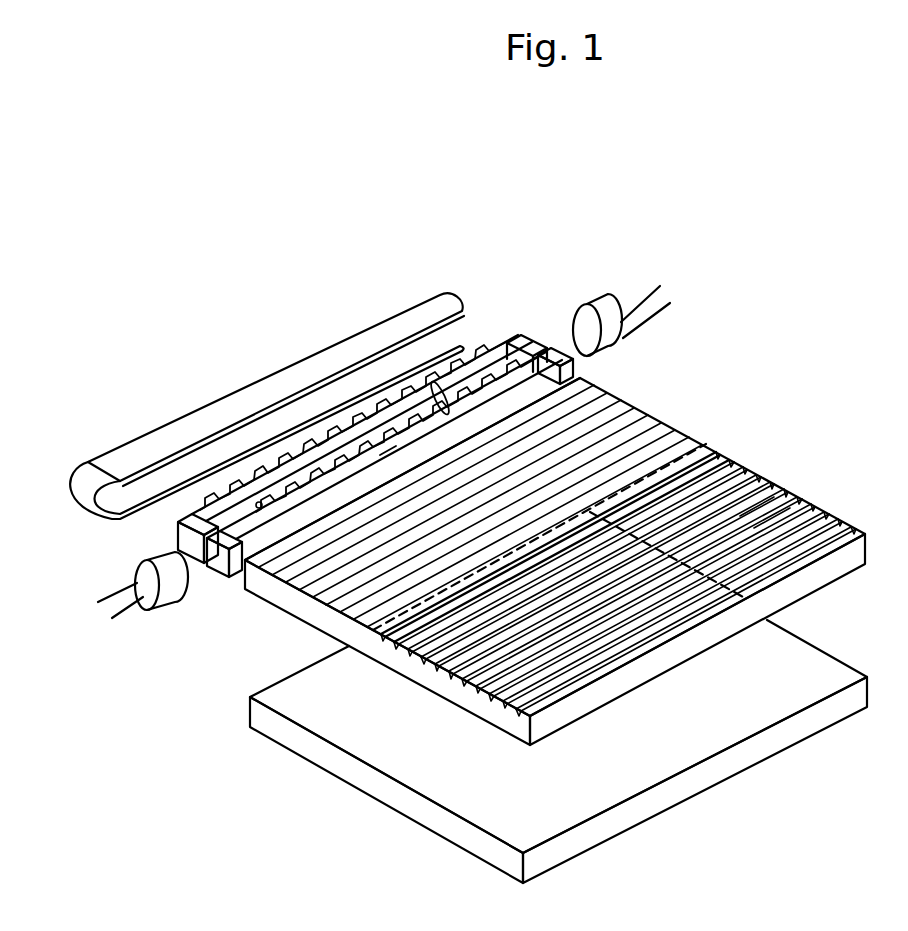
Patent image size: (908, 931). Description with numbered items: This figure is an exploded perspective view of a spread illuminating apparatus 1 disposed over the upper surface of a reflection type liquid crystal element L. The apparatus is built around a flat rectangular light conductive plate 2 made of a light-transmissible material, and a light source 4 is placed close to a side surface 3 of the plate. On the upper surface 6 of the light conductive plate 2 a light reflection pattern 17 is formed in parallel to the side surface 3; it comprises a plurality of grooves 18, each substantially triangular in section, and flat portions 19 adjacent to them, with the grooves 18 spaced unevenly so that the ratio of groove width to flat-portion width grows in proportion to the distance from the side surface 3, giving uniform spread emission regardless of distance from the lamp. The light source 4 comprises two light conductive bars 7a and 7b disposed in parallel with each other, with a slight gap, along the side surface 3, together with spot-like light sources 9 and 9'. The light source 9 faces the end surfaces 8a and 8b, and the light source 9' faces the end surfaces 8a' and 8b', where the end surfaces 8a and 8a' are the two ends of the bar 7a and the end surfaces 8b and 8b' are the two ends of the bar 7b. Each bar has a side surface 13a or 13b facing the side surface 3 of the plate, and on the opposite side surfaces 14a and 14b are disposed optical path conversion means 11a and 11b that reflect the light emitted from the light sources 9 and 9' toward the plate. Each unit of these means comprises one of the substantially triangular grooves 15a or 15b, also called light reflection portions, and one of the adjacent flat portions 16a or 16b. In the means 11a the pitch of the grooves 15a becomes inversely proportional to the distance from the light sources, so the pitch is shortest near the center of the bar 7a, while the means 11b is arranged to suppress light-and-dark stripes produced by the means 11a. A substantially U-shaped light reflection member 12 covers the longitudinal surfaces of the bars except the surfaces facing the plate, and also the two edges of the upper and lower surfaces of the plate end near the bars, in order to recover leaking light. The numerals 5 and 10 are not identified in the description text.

The spread illuminating apparatus 1 is at (733, 293).
The light conductive plate 2 is at (460, 693).
The side surface 3 is at (233, 573).
The light source 4 is at (653, 193).
The side end face of light guide plate 5 is at (380, 660).
The upper surface 6 is at (655, 455).
The light conductive bar 7a is at (523, 343).
The light conductive bar 7b is at (550, 357).
The end surface 8a is at (496, 298).
The end surface 8b is at (612, 358).
The end surface 8a' is at (133, 536).
The end surface 8b' is at (201, 599).
The spot-like light source 9 is at (621, 269).
The spot-like light source 9' is at (111, 585).
The reflection sheet 10 is at (678, 650).
The optical path conversion means 11a is at (282, 464).
The optical path conversion means 11b is at (407, 413).
The light reflection member 12 is at (117, 462).
The side surface 13a is at (260, 497).
The side surface 13b is at (267, 500).
The side surface 14a is at (388, 452).
The side surface 14b is at (449, 405).
The grooves 15a is at (383, 441).
The grooves 15b is at (355, 424).
The flat portions 16a is at (399, 449).
The flat portions 16b is at (369, 431).
The light reflection pattern 17 is at (885, 345).
The grooves 18 is at (768, 500).
The flat portions 19 is at (790, 525).
The reflection type liquid crystal element L is at (690, 805).